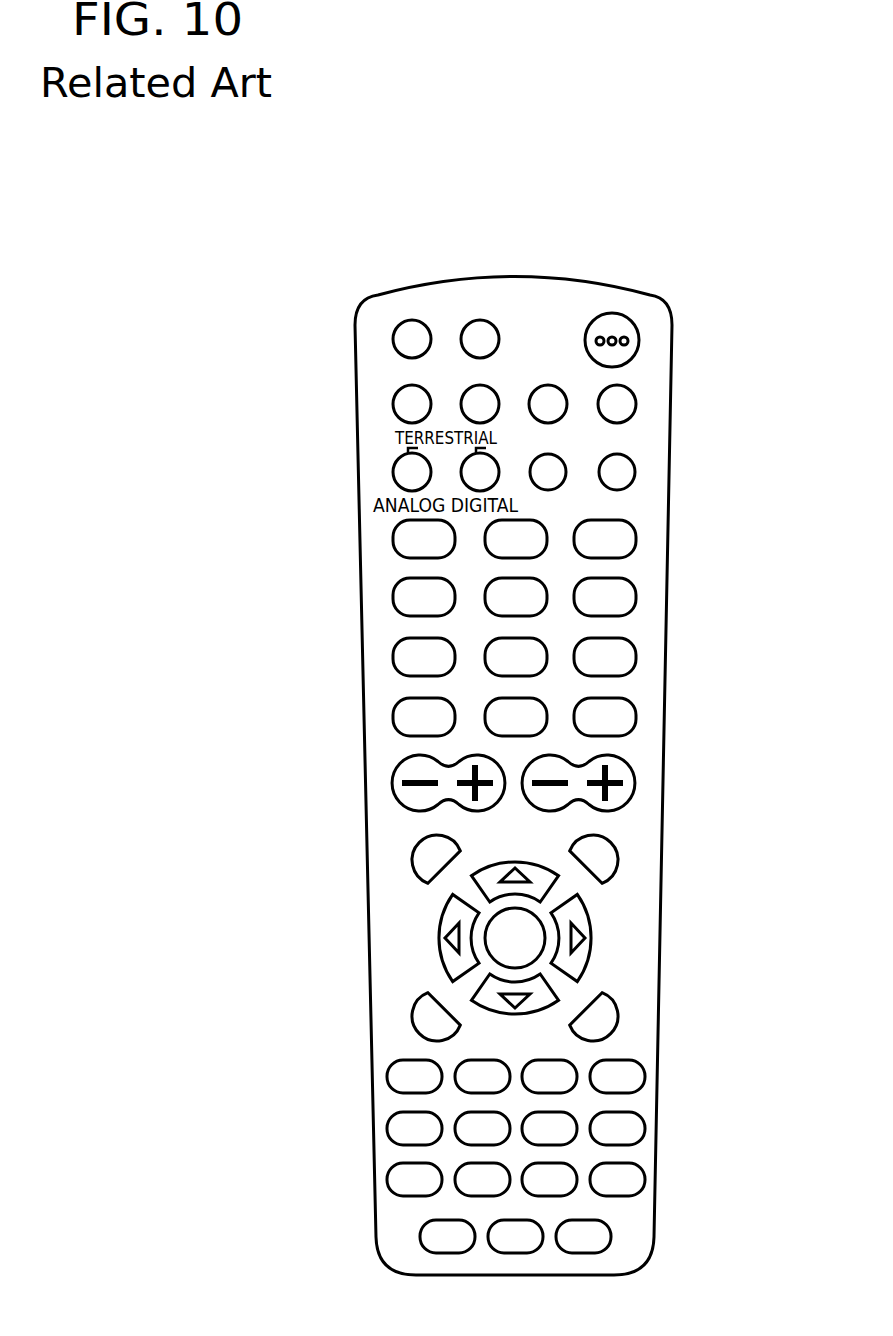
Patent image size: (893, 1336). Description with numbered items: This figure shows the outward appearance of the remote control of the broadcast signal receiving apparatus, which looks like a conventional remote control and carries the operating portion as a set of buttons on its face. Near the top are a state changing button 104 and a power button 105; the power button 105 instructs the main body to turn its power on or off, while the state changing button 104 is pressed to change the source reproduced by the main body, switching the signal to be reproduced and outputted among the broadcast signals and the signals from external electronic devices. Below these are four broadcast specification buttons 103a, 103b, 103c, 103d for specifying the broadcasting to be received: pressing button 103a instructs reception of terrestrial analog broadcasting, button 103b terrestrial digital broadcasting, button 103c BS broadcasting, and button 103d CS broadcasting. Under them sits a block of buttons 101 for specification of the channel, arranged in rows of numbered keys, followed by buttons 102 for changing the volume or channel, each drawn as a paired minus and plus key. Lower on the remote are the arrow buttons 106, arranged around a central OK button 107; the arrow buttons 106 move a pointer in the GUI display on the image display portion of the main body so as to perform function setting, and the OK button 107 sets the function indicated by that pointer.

The buttons for specification of the channel 101 is at (347, 522).
The buttons for changing the volume or channel 102 is at (347, 750).
The broadcast specification button 103a is at (393, 472).
The broadcast specification button 103b is at (462, 472).
The broadcast specification button 103c is at (567, 462).
The broadcast specification button 103d is at (635, 472).
The state changing button 104 is at (393, 339).
The power button 105 is at (639, 340).
The arrow buttons 106 is at (590, 930).
The OK button 107 is at (545, 945).